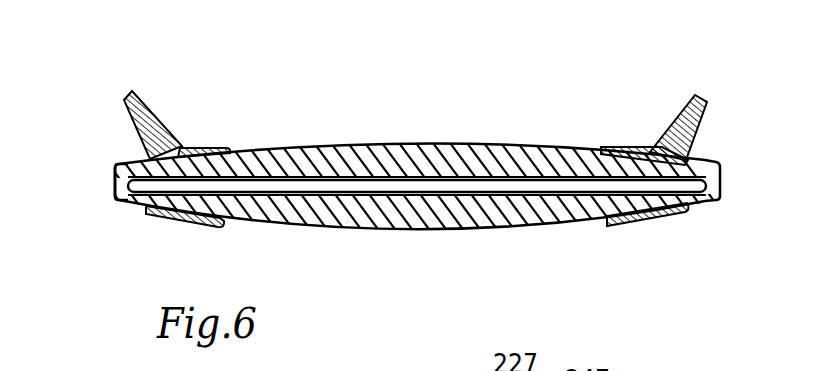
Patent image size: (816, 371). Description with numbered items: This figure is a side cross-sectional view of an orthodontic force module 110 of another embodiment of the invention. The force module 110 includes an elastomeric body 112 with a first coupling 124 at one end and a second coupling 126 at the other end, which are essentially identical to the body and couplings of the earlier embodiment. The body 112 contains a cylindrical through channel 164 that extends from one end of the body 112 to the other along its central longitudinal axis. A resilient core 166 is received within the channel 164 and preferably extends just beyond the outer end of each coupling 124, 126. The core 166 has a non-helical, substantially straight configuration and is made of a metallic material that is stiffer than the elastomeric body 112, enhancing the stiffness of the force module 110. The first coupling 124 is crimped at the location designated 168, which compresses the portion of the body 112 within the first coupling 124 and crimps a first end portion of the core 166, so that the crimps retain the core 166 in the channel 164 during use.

The force module 110 is at (492, 98).
The elastomeric body 112 is at (369, 238).
The first coupling 124 is at (203, 148).
The second coupling 126 is at (628, 147).
The cylindrical through channel 164 is at (112, 190).
The resilient core 166 is at (325, 187).
The crimp location 168 is at (190, 212).